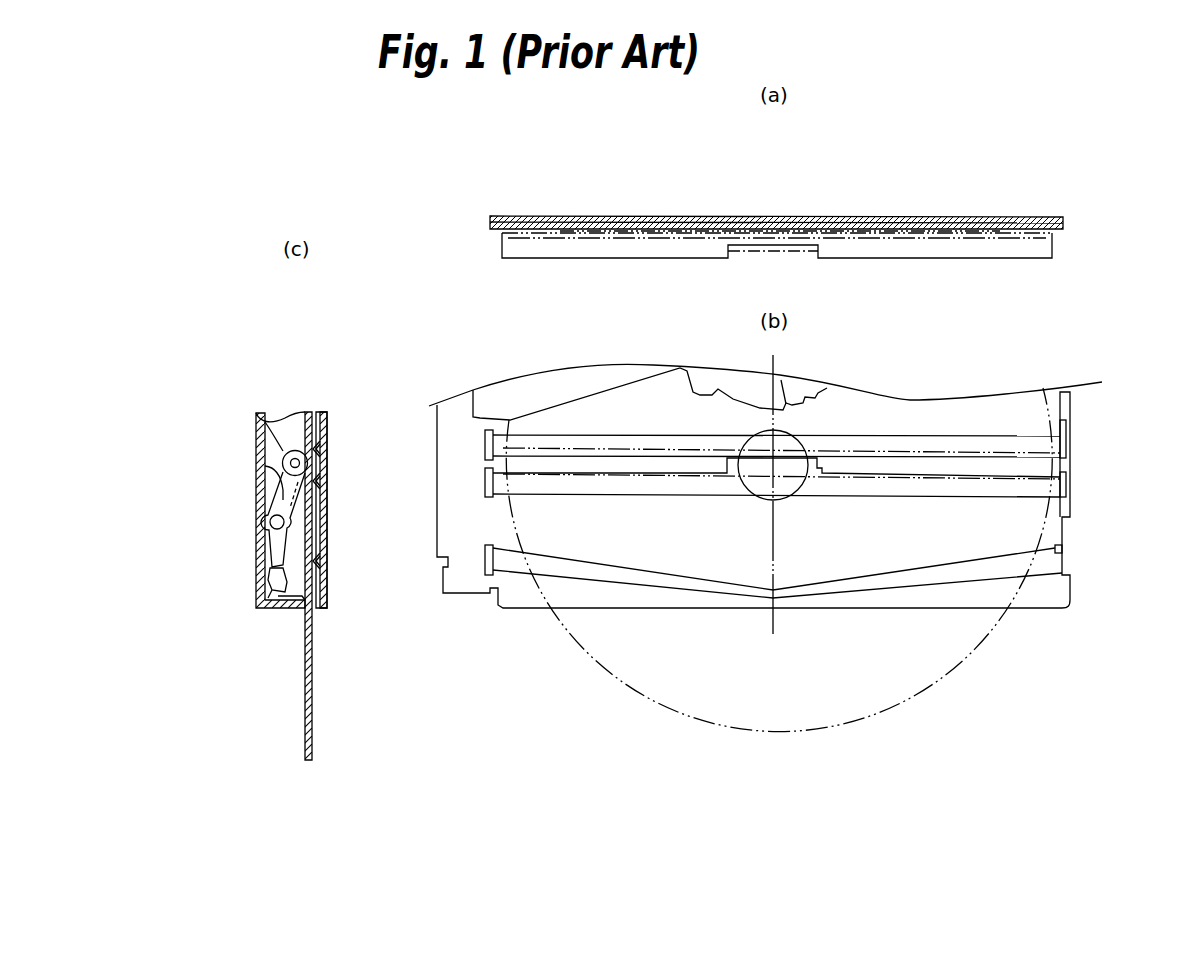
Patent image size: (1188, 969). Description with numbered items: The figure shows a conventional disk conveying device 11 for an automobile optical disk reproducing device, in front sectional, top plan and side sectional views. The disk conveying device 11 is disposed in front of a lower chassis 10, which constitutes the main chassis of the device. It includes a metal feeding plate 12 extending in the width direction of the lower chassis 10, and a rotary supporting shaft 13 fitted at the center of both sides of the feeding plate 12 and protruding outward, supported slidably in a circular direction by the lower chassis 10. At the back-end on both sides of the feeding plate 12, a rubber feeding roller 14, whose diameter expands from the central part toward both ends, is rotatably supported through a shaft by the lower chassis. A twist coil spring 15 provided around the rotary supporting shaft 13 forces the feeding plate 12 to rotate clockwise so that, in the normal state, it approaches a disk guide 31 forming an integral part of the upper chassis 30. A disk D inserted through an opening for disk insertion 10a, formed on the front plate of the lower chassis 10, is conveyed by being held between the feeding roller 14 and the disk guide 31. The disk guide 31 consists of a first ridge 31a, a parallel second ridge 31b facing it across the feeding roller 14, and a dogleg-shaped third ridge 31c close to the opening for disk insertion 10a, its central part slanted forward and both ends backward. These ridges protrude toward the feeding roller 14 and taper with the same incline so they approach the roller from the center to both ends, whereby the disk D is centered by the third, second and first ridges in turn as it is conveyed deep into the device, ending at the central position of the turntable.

In FIG. 1C, the lower chassis 10 is at (248, 498).
In FIG. 1C, the opening for disk insertion 10a is at (318, 606).
In FIG. 1C, the disk conveying device 11 is at (302, 529).
In FIG. 1C, the feeding plate 12 is at (251, 509).
In FIG. 1C, the rotary supporting shaft 13 is at (268, 538).
In FIG. 1A, the feeding roller 14 is at (1040, 253).
In FIG. 1B, the feeding roller 14 is at (942, 452).
In FIG. 1C, the feeding roller 14 is at (265, 415).
In FIG. 1C, the twist coil spring 15 is at (283, 480).
In FIG. 1C, the upper chassis 30 is at (323, 422).
In FIG. 1C, the disk guide 31 is at (362, 485).
In FIG. 1A, the first ridge 31a is at (794, 194).
In FIG. 1B, the first ridge 31a is at (1035, 442).
In FIG. 1C, the first ridge 31a is at (320, 453).
In FIG. 1A, the second ridge 31b is at (776, 222).
In FIG. 1B, the second ridge 31b is at (1033, 485).
In FIG. 1C, the second ridge 31b is at (322, 486).
In FIG. 1A, the third ridge 31c is at (897, 220).
In FIG. 1B, the third ridge 31c is at (1045, 562).
In FIG. 1C, the third ridge 31c is at (327, 561).
In FIG. 1A, the disk D is at (748, 214).
In FIG. 1B, the disk D is at (925, 705).
In FIG. 1C, the disk D is at (313, 730).